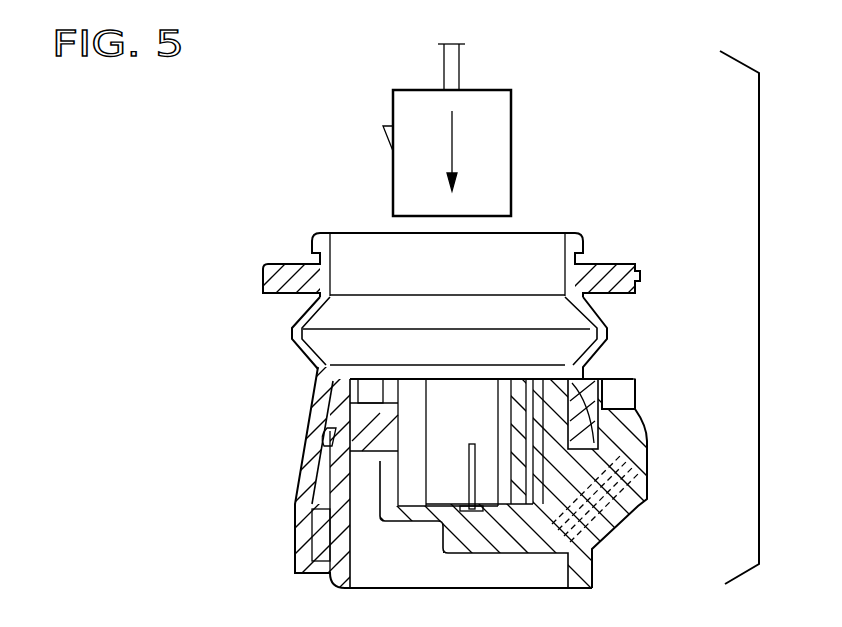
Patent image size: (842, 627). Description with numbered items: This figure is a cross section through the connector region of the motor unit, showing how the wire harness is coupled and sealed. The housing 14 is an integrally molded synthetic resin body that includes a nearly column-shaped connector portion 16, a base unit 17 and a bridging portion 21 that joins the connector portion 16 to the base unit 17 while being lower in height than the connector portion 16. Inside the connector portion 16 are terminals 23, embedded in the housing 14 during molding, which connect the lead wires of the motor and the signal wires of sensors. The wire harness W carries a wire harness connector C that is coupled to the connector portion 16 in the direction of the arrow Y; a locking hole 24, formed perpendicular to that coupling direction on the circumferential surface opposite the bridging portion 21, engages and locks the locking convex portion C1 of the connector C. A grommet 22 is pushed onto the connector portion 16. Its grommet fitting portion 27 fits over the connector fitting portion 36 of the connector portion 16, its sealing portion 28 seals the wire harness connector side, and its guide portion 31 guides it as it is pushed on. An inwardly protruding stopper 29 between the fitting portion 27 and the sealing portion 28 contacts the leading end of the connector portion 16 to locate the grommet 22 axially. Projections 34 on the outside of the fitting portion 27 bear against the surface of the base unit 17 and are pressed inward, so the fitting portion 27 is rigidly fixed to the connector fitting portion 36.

The housing 14 is at (652, 447).
The connector portion 16 is at (355, 587).
The base unit 17 is at (645, 410).
The bridging portion 21 is at (615, 515).
The grommet 22 is at (588, 231).
The terminals 23 is at (472, 442).
The locking hole 24 is at (400, 440).
The grommet fitting portion 27 is at (320, 397).
The sealing portion 28 is at (292, 320).
The stopper 29 is at (373, 377).
The guide portion 31 is at (300, 517).
The projections 34 is at (640, 400).
The connector fitting portion 36 is at (600, 377).
The wire harness W is at (460, 62).
The wire harness connector C is at (512, 120).
The locking convex portion C1 is at (387, 138).
The coupling direction arrow Y is at (455, 140).